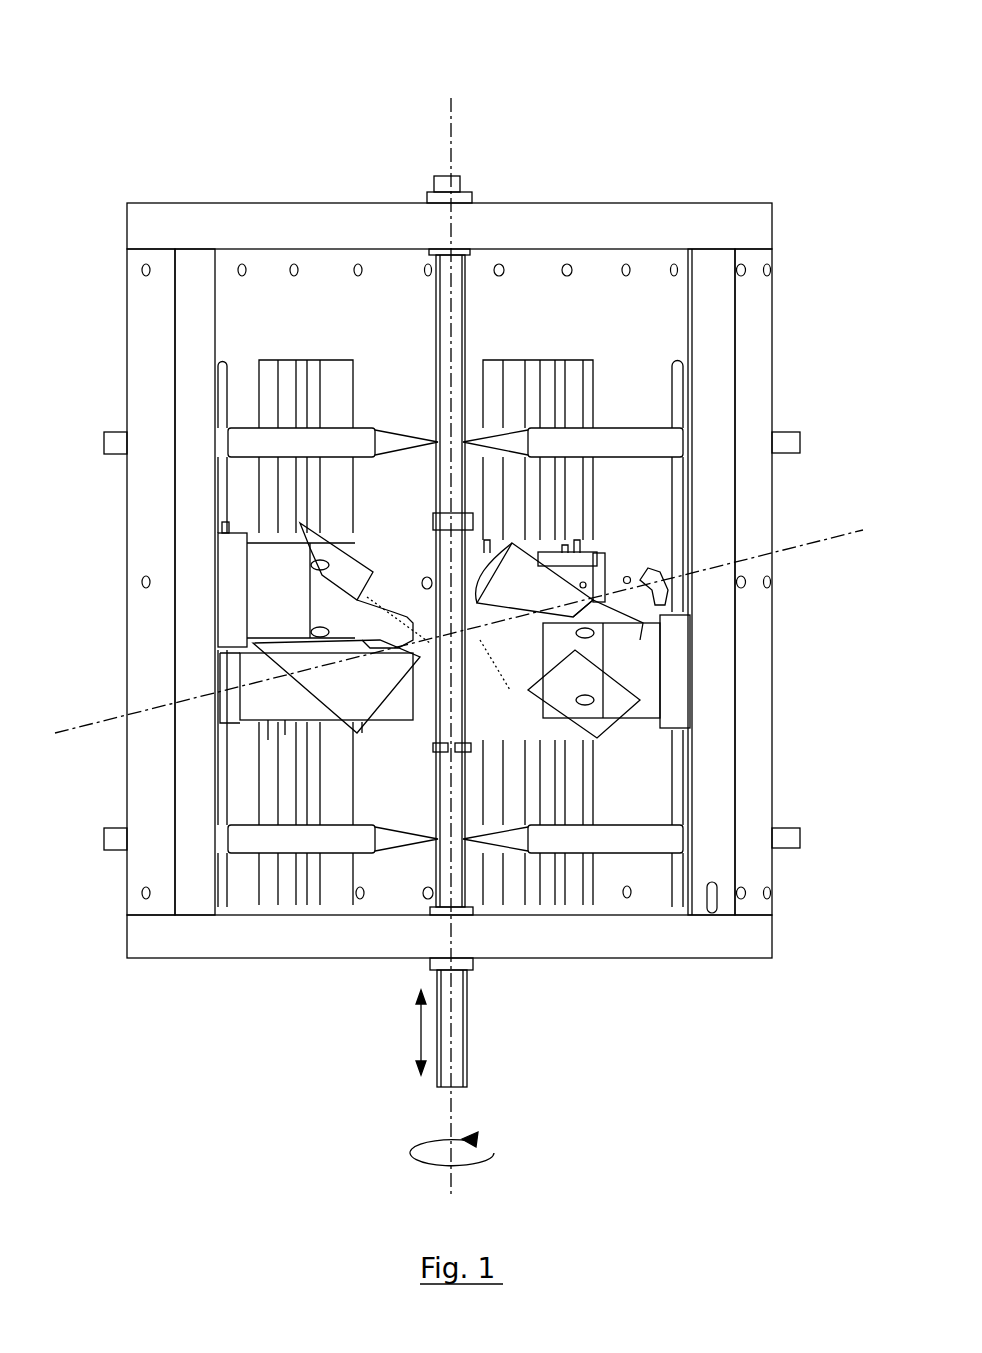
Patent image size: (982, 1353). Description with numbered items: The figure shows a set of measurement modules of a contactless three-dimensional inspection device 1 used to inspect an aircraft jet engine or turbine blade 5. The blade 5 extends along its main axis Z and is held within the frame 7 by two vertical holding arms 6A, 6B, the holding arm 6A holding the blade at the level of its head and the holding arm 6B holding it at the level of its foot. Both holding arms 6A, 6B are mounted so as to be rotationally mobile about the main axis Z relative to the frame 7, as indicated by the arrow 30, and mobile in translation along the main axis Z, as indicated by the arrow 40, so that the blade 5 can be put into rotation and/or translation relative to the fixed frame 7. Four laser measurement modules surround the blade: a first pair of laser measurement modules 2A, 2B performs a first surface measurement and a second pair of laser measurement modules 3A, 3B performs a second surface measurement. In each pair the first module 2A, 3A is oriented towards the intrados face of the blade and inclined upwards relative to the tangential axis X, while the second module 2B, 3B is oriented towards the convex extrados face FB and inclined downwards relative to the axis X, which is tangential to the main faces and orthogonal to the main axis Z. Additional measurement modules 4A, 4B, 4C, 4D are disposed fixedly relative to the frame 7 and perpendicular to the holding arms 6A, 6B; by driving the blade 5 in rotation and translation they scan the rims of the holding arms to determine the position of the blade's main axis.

The contactless three-dimensional inspection device 1 is at (713, 127).
The first laser measurement module of the first pair 2A is at (520, 545).
The second laser measurement module of the first pair 2B is at (597, 727).
The first laser measurement module of the second pair 3A is at (300, 523).
The second laser measurement module of the second pair 3B is at (310, 660).
The additional measurement module 4A is at (252, 432).
The additional measurement module 4B is at (655, 435).
The additional measurement module 4C is at (632, 850).
The additional measurement module 4D is at (250, 846).
The blade 5 is at (434, 712).
The holding arm 6A is at (436, 372).
The holding arm 6B is at (462, 887).
The frame 7 is at (757, 960).
The rotation arrow 30 is at (487, 1167).
The translation arrow 40 is at (418, 1032).
The second main face (extrados) FB is at (465, 717).
The tangential axis X is at (459, 619).
The main axis Z is at (462, 647).